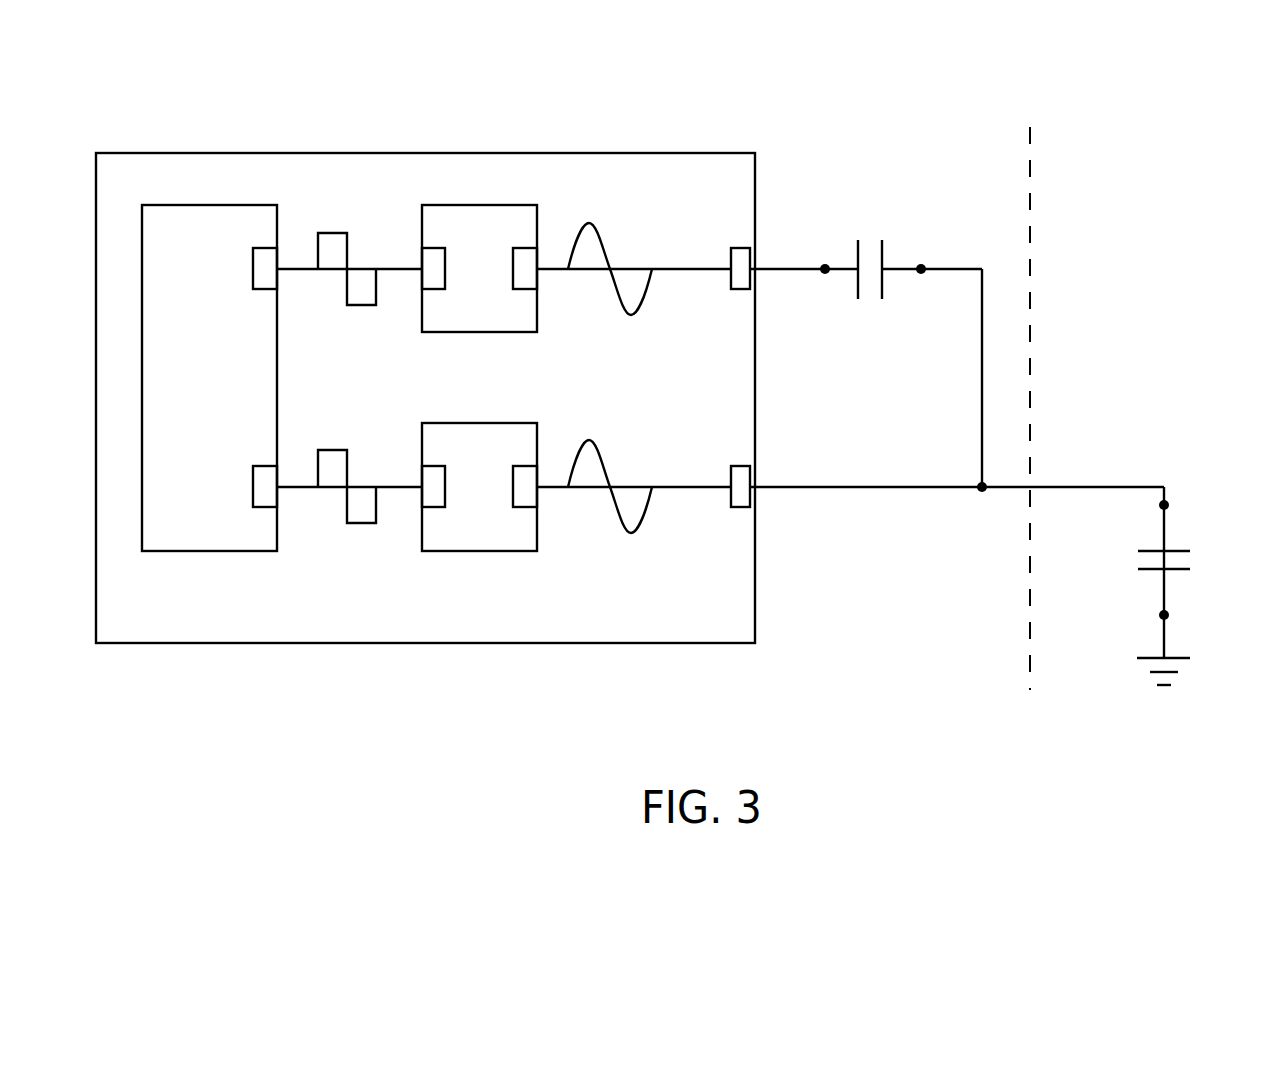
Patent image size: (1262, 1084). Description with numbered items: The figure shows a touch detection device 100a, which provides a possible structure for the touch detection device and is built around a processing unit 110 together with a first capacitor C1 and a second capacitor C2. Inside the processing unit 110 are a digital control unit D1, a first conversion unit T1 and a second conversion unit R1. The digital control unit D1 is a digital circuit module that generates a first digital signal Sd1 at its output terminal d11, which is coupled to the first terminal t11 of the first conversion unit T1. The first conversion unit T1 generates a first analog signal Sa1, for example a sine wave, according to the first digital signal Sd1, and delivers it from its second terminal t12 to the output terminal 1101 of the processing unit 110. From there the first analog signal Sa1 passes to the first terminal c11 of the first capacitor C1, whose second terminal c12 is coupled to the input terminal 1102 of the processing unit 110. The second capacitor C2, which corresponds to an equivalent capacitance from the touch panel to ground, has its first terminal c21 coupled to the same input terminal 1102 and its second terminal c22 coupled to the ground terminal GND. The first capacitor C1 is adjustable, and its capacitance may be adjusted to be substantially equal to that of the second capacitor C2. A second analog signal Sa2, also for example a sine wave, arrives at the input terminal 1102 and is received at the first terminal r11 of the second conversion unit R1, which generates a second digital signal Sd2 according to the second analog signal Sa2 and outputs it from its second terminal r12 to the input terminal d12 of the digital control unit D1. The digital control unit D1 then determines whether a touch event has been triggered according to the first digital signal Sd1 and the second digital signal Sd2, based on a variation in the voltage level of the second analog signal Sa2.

The touch detection device 100a is at (1125, 107).
The processing unit 110 is at (755, 542).
The output terminal 1101 is at (730, 285).
The input terminal 1102 is at (730, 503).
The digital control unit D1 is at (209, 378).
The output terminal d11 is at (253, 279).
The input terminal d12 is at (253, 497).
The first conversion unit T1 is at (479, 268).
The first terminal t11 is at (447, 278).
The second terminal t12 is at (510, 278).
The second conversion unit R1 is at (479, 487).
The first terminal r11 is at (510, 496).
The second terminal r12 is at (447, 496).
The first digital signal Sd1 is at (387, 220).
The second digital signal Sd2 is at (387, 437).
The first analog signal Sa1 is at (652, 210).
The second analog signal Sa2 is at (652, 426).
The first capacitor C1 is at (866, 286).
The first terminal c11 is at (818, 252).
The second terminal c12 is at (922, 252).
The second capacitor C2 is at (1145, 564).
The first terminal c21 is at (1186, 493).
The second terminal c22 is at (1187, 623).
The ground terminal GND is at (1193, 677).